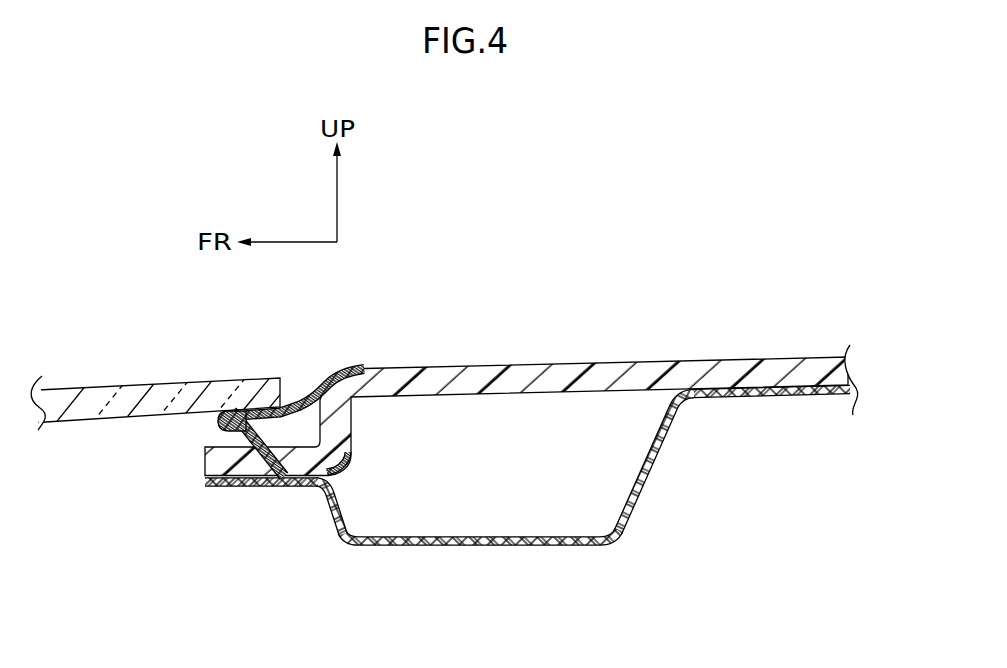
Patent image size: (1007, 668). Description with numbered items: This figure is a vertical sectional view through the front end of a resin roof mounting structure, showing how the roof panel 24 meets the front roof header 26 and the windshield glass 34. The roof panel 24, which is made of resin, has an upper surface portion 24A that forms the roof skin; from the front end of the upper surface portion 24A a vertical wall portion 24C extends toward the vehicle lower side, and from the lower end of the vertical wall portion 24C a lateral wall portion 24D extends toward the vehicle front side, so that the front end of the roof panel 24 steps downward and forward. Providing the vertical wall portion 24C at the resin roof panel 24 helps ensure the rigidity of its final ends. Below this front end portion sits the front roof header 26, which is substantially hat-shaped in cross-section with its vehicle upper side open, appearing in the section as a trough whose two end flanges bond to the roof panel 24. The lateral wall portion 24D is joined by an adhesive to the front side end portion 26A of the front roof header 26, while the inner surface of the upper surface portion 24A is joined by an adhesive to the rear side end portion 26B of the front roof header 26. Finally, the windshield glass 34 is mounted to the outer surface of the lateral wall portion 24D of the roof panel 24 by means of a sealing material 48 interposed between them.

The roof panel 24 is at (485, 383).
The upper surface portion 24A is at (520, 366).
The vertical wall portion 24C is at (342, 426).
The lateral wall portion 24D is at (207, 459).
The front roof header 26 is at (527, 515).
The front side end portion 26A is at (266, 487).
The rear side end portion 26B is at (778, 396).
The windshield glass 34 is at (134, 385).
The sealing material 48 is at (217, 421).